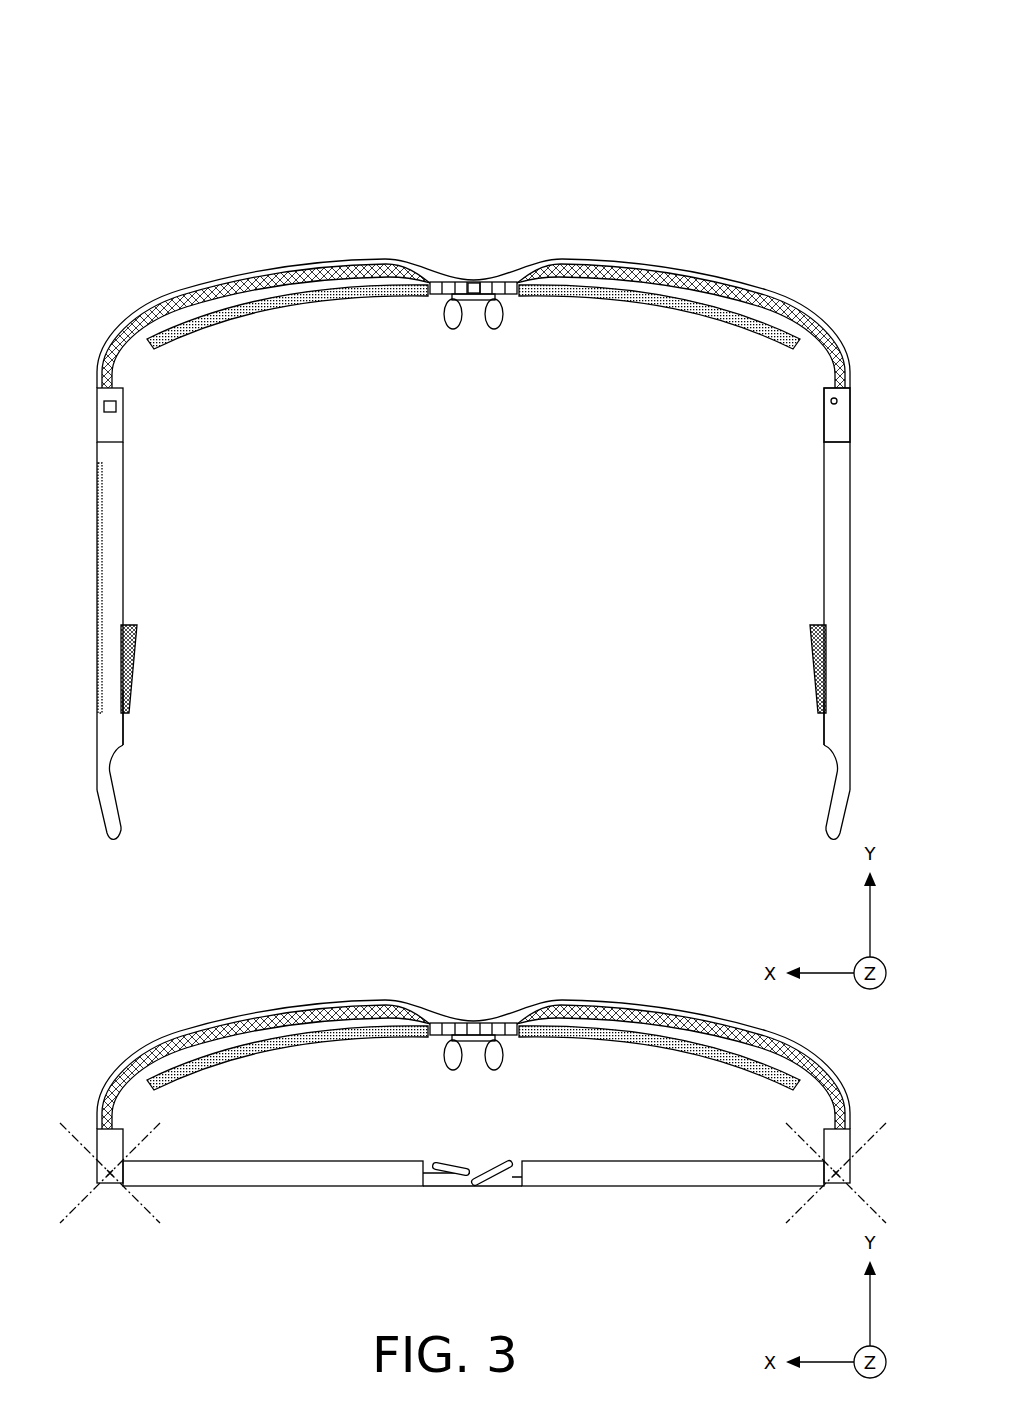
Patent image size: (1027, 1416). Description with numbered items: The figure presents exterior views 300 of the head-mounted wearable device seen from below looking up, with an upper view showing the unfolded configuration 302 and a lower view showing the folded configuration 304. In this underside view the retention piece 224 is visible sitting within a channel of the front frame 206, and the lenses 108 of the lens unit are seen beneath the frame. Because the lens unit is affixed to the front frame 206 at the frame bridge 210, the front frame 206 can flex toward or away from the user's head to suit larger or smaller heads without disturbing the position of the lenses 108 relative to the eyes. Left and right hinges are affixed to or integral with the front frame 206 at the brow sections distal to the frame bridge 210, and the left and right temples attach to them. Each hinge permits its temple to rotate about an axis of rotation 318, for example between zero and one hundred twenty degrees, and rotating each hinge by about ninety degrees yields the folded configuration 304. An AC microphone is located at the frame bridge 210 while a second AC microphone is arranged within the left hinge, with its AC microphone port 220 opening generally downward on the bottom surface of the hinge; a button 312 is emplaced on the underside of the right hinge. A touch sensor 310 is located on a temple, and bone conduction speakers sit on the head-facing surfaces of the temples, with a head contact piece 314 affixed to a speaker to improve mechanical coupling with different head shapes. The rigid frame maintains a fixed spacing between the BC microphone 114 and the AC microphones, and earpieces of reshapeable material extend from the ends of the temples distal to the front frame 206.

The exterior views 300 is at (463, 454).
The unfolded configuration 302 is at (451, 454).
The folded configuration 304 is at (243, 972).
The front frame 206 is at (276, 257).
The frame bridge 210 is at (540, 181).
The retention piece 224 is at (627, 265).
The lenses 108 is at (270, 305).
The AC microphone port 220 is at (831, 402).
The button 312 is at (118, 405).
The touch sensor 310 is at (97, 537).
The head contact piece 314 is at (126, 697).
The BC microphone 114 is at (704, 754).
The axis of rotation 318 is at (808, 1181).